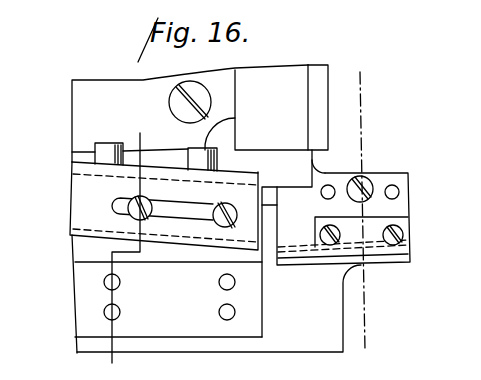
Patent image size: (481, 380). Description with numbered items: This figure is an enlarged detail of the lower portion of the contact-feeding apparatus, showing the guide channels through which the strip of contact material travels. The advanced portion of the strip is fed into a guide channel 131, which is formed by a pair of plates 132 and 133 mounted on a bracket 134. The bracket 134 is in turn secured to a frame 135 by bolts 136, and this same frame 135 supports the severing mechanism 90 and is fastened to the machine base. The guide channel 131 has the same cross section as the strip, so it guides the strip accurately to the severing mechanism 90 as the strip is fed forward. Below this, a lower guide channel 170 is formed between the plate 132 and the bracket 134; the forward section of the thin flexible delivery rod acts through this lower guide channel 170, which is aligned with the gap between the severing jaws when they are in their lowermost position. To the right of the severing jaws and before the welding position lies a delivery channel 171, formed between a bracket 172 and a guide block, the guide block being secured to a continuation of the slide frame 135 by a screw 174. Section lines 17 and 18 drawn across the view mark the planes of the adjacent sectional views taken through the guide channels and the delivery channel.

The severing mechanism 90 is at (328, 64).
The guide channel 131 is at (92, 146).
The plate 132 is at (95, 189).
The plate 133 is at (88, 162).
The bracket 134 is at (80, 245).
The frame 135 is at (315, 327).
The bolts 136 is at (219, 282).
The lower guide channel 170 is at (78, 228).
The delivery channel 171 is at (385, 263).
The bracket 172 is at (370, 227).
The screw 174 is at (372, 182).
The section line 17- 17 is at (152, 134).
The section line 18- 18 is at (347, 72).